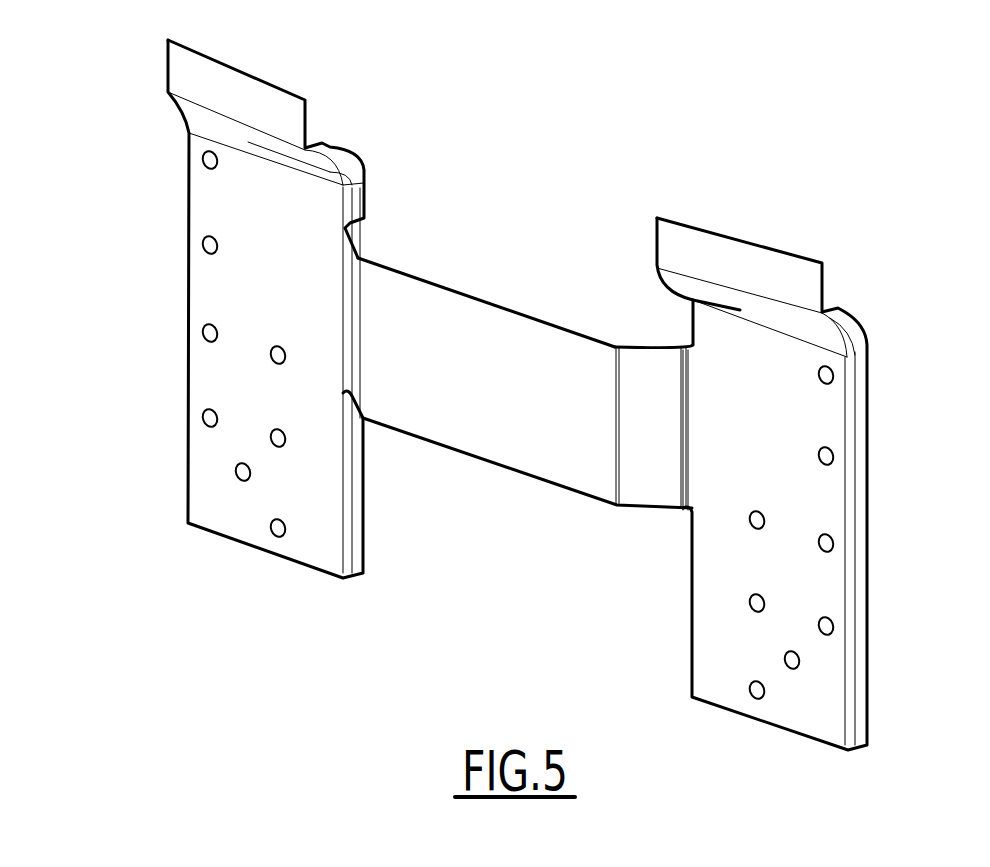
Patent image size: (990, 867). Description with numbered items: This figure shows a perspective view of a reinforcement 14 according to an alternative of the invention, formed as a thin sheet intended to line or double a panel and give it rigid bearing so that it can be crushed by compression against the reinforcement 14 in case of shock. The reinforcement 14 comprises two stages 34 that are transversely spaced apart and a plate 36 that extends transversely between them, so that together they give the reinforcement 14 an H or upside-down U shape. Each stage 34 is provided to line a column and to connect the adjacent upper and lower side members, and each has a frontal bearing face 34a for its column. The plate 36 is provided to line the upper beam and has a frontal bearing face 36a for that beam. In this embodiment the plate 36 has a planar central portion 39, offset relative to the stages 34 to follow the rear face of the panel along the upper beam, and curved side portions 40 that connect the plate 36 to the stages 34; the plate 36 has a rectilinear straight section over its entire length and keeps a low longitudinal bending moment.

The reinforcement 14 is at (531, 392).
The stage 34 is at (531, 395).
The frontal bearing face 34a is at (215, 368).
The plate 36 is at (524, 358).
The frontal bearing face 36a is at (493, 440).
The planar central portion 39 is at (468, 317).
The curved side portions 40 is at (357, 242).